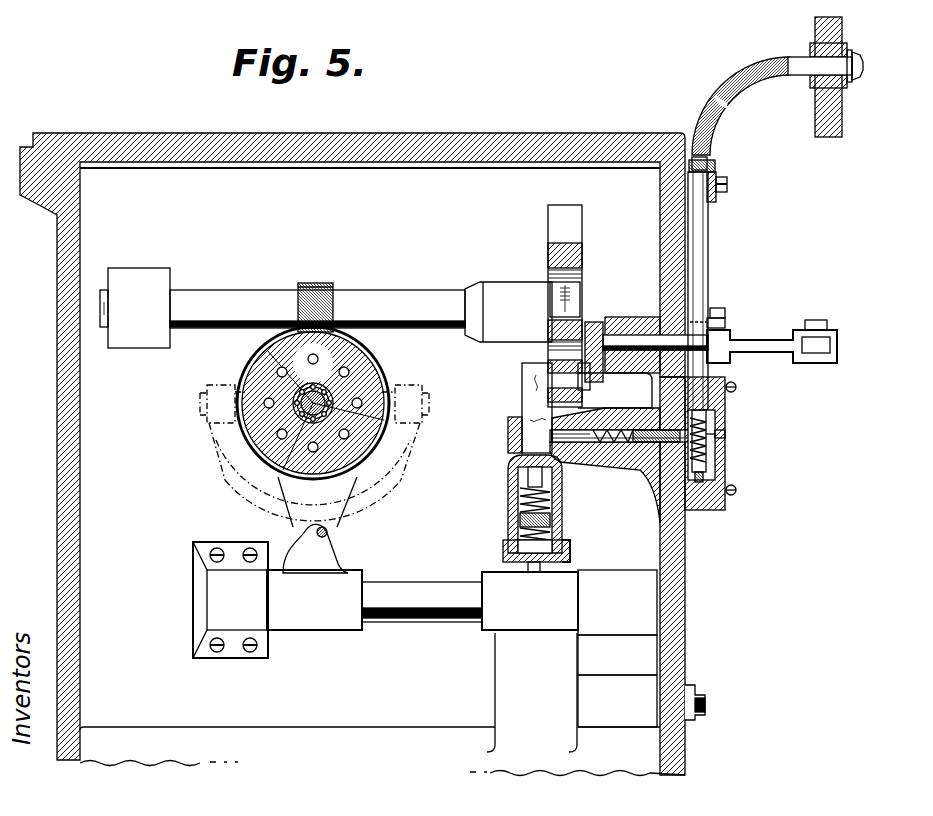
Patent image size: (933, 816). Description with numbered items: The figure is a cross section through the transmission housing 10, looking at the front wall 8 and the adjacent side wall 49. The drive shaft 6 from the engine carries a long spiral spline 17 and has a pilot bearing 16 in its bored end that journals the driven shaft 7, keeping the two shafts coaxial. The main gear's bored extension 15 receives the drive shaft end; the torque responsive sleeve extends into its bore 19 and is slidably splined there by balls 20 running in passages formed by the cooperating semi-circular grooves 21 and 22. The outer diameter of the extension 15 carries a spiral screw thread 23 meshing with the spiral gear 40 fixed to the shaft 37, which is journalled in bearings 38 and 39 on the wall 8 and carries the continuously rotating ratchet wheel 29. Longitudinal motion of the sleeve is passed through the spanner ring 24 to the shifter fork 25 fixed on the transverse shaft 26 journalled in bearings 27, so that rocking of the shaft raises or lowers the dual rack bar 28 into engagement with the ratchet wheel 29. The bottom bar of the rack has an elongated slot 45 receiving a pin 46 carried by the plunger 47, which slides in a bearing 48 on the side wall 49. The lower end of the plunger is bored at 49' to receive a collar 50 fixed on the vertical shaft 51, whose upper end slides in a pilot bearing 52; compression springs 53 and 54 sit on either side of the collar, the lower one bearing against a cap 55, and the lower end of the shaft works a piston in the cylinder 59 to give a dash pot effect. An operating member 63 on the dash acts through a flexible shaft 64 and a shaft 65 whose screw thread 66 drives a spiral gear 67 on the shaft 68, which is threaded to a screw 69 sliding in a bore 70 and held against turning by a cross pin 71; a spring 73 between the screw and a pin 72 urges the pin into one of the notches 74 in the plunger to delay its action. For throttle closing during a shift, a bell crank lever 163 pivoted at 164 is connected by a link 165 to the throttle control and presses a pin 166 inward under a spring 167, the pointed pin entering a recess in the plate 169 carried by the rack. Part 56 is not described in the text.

The drive shaft 6 is at (355, 475).
The driven shaft 7 is at (355, 380).
The front wall 8 is at (92, 440).
The transmission housing 10 is at (72, 306).
The bored extension 15 is at (270, 368).
The pilot bearing 16 is at (290, 470).
The spiral spline 17 is at (345, 402).
The bore 19 is at (340, 365).
The balls 20 is at (350, 405).
The semi-circular groove 21 is at (352, 428).
The semi-circular groove 22 is at (275, 392).
The spiral screw thread 23 is at (278, 335).
The spanner ring 24 is at (320, 488).
The shifter fork 25 is at (222, 500).
The transverse shaft 26 is at (405, 595).
The bearings 27 is at (246, 595).
The dual rack bar 28 is at (570, 243).
The ratchet wheel 29 is at (572, 293).
The shaft 37 is at (418, 290).
The bearing 38 is at (148, 290).
The bearing 39 is at (510, 285).
The spiral gear 40 is at (327, 283).
The elongated slot 45 is at (548, 372).
The pin 46 is at (584, 390).
The plunger 47 is at (540, 392).
The bearing 48 is at (508, 437).
The side wall 49 is at (619, 648).
The bore 49' is at (508, 520).
The collar 50 is at (522, 520).
The vertical shaft 51 is at (533, 575).
The pilot bearing 52 is at (512, 472).
The compression spring 53 is at (512, 490).
The compression spring 54 is at (515, 560).
The cap 55 is at (566, 548).
The support block 56 is at (492, 628).
The cylinder 59 is at (500, 665).
The operating member 63 is at (867, 65).
The flexible shaft 64 is at (748, 90).
The shaft 65 is at (708, 247).
The screw thread 66 is at (714, 417).
The spiral gear 67 is at (714, 462).
The shaft 68 is at (728, 436).
The screw 69 is at (706, 432).
The bore 70 is at (603, 446).
The cross pin 71 is at (640, 445).
The pin 72 is at (560, 458).
The spring 73 is at (612, 410).
The notches 74 is at (528, 418).
The bell crank lever 163 is at (760, 340).
The pivot 164 is at (720, 308).
The link 165 is at (818, 346).
The pin 166 is at (640, 340).
The spring 167 is at (725, 322).
The plate 169 is at (596, 330).